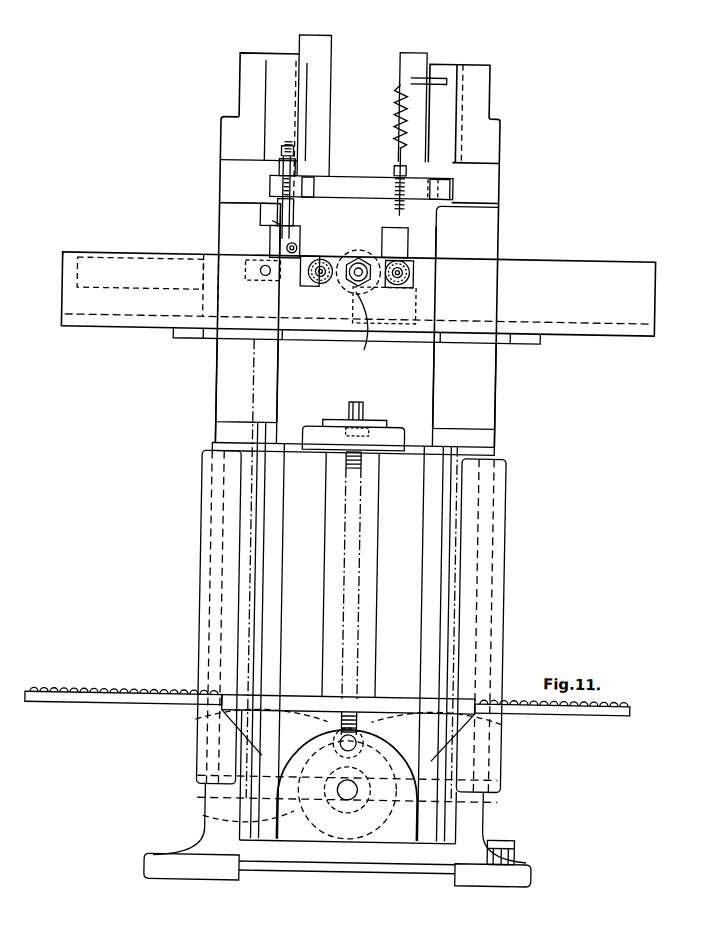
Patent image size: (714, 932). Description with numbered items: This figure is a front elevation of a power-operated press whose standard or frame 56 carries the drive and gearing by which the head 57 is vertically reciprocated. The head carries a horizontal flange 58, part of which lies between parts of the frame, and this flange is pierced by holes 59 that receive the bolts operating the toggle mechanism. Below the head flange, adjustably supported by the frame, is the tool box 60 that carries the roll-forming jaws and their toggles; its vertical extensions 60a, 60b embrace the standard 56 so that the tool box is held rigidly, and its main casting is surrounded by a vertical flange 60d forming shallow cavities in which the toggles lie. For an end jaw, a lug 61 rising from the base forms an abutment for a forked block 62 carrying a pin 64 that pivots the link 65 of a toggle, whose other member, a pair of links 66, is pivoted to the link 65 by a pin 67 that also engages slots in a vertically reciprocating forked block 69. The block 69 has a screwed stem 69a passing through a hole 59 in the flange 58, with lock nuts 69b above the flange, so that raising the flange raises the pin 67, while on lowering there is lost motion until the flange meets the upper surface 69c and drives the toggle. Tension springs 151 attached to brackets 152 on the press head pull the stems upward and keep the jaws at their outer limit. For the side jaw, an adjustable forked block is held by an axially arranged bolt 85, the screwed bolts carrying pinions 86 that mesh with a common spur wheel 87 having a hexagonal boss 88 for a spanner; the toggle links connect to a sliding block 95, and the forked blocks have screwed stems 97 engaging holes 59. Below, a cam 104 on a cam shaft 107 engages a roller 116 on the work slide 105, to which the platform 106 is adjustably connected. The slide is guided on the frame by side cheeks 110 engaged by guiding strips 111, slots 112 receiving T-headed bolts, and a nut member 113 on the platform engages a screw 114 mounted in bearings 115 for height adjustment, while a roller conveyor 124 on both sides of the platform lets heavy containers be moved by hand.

The standard or frame 56 is at (233, 140).
The head 57 is at (315, 113).
The horizontal flange 58 is at (356, 184).
The holes 59 is at (312, 190).
The tool box 60 is at (130, 343).
The vertical extension of the tool box 60a is at (222, 244).
The vertical extension of the tool box 60b is at (226, 404).
The vertical flange 60d is at (66, 261).
The lug 61 is at (198, 274).
The forked block 62 is at (265, 255).
The pin 64 is at (265, 280).
The link 65 is at (268, 232).
The pair of links 66 is at (305, 255).
The pin 67 is at (294, 250).
The forked block 69 is at (276, 228).
The screwed stem 69a is at (289, 214).
The lock nuts 69b is at (281, 144).
The upper surface of the block 69c is at (270, 222).
The bolt 85 is at (313, 285).
The pinions 86 is at (333, 283).
The spur wheel 87 is at (357, 250).
The hexagonal boss 88 is at (356, 330).
The sliding block 95 is at (398, 232).
The screwed stems 97 is at (390, 214).
The cam 104 is at (215, 820).
The work slide 105 is at (333, 574).
The platform 106 is at (296, 698).
The cam shaft 107 is at (352, 800).
The side cheeks 110 is at (236, 556).
The guiding strips 111 is at (210, 599).
The slots 112 is at (260, 588).
The nut member 113 is at (362, 706).
The screw 114 is at (358, 568).
The bearings 115 is at (378, 445).
The roller 116 is at (202, 724).
The roller conveyor 124 is at (123, 707).
The tension springs 151 is at (391, 101).
The brackets 152 is at (398, 54).